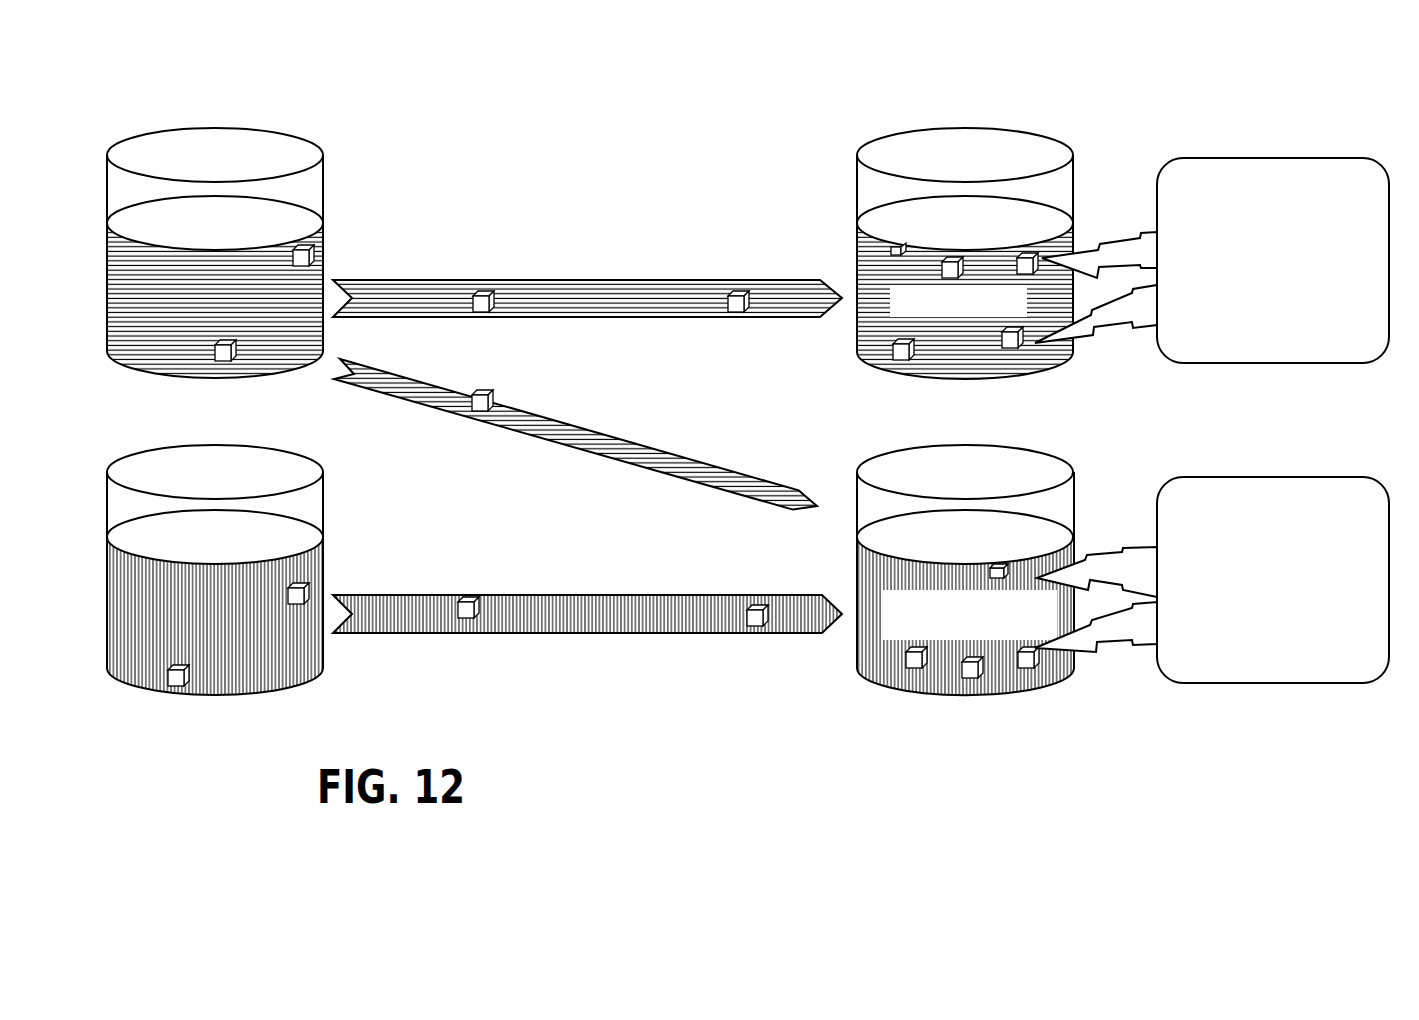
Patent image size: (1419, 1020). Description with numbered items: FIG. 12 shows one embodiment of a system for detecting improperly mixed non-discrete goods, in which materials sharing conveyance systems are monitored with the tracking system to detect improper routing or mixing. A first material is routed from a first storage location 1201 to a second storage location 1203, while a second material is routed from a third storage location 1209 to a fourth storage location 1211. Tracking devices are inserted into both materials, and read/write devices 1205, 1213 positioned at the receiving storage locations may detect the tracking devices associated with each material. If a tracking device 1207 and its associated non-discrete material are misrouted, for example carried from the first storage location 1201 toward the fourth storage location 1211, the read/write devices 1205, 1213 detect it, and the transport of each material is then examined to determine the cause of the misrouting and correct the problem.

The first storage location 1201 is at (250, 262).
The second storage location 1203 is at (990, 262).
The read/write device 1205 is at (1235, 185).
The tracking device 1207 is at (484, 413).
The third storage location 1209 is at (250, 579).
The fourth storage location 1211 is at (870, 647).
The read/write device 1213 is at (1235, 504).